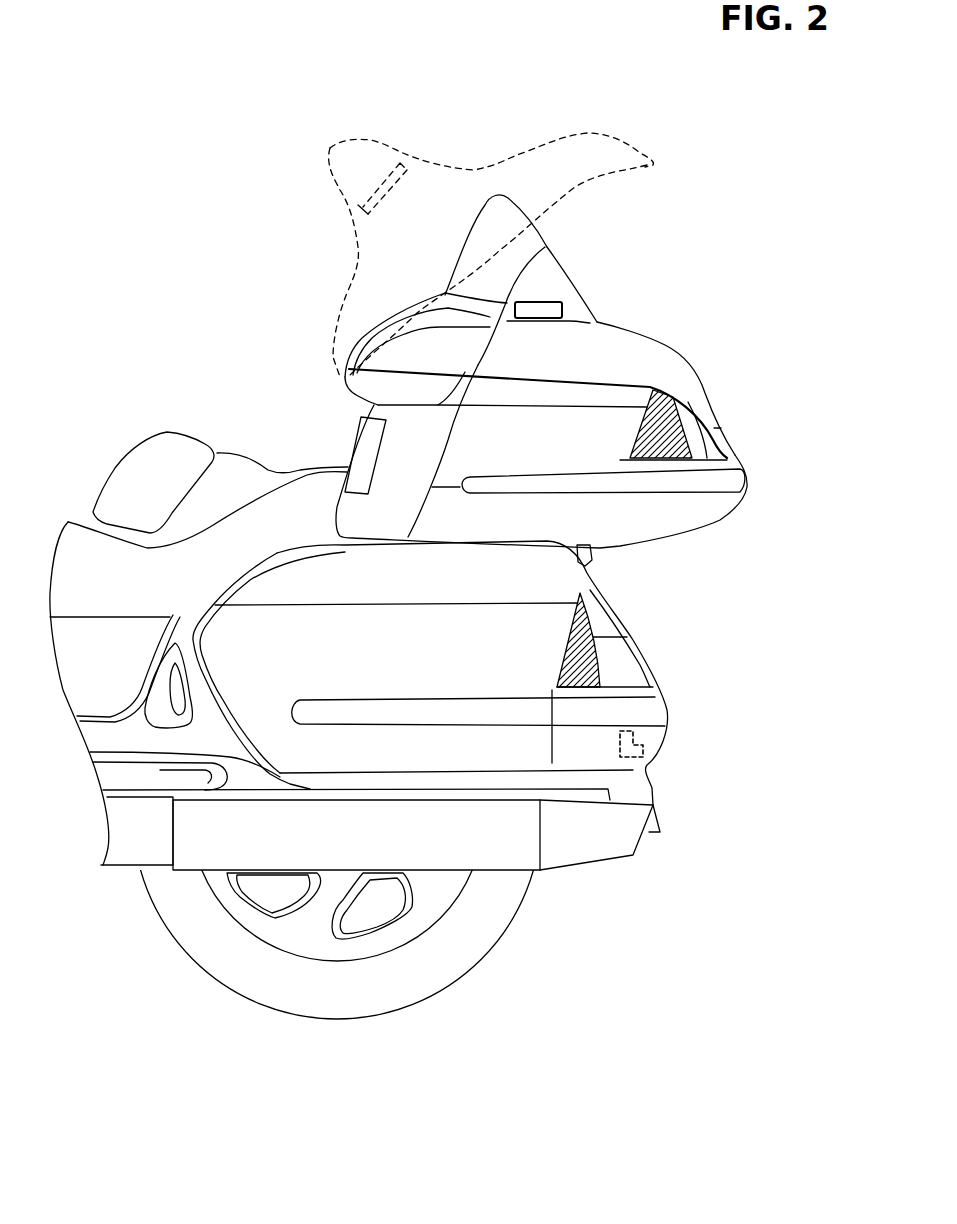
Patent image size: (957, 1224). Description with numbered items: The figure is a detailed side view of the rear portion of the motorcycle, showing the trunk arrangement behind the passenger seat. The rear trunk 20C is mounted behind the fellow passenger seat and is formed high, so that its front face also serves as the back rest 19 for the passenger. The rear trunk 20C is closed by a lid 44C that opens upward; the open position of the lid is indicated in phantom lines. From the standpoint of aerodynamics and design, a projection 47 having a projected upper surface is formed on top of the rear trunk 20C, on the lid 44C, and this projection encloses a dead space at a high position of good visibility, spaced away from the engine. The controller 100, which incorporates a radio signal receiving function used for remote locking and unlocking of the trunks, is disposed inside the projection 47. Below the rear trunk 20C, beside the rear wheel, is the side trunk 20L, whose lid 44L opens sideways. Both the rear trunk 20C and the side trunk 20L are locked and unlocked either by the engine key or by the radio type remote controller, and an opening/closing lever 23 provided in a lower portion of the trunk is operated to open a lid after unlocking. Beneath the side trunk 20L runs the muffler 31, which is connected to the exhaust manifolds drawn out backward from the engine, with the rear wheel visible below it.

The back rest 19 is at (537, 236).
The projection 47 is at (545, 276).
The controller 100 is at (553, 298).
The lid 44C is at (490, 130).
The rear trunk 20C is at (705, 357).
The side trunk 20L is at (635, 622).
The lid 44L is at (417, 591).
The opening/closing lever 23 is at (643, 748).
The muffler 31 is at (523, 860).